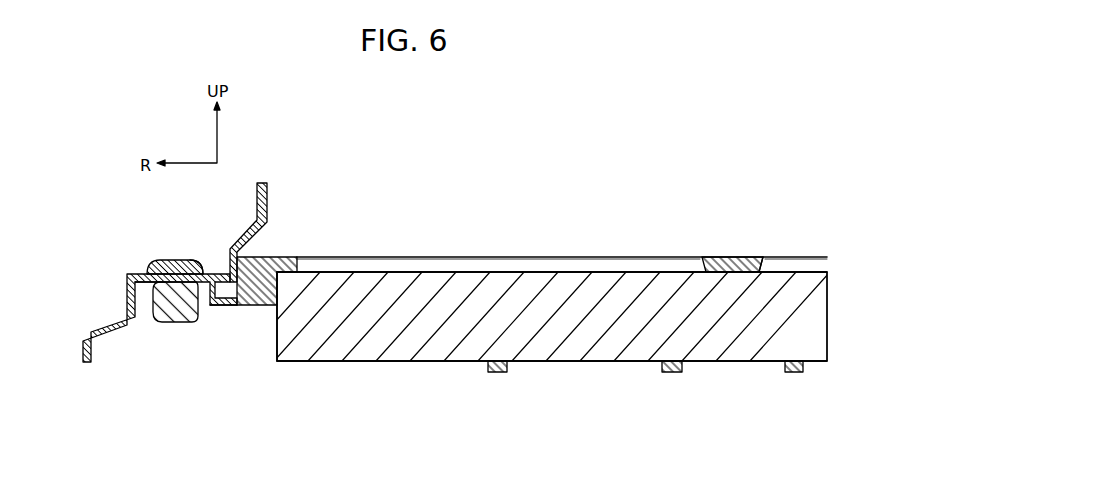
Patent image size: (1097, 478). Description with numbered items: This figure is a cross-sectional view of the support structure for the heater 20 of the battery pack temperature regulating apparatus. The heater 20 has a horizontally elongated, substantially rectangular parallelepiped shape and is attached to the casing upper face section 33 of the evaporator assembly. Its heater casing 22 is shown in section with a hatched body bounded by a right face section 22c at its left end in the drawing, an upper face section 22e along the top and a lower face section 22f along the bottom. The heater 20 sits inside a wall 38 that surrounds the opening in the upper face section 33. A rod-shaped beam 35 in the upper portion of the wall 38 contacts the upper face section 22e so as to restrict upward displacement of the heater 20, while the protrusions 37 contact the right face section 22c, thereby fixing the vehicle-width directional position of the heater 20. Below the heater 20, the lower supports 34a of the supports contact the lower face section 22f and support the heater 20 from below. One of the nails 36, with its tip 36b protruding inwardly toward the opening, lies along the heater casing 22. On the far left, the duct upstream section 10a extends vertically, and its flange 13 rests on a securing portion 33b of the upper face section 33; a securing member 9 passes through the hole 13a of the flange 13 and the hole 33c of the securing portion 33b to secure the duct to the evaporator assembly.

The securing member 9 is at (158, 259).
The duct upstream section 10a is at (254, 212).
The flange 13 is at (136, 273).
The hole 13a is at (191, 261).
The heater 20 is at (340, 371).
The heater casing 22 is at (393, 350).
The right face section 22c is at (277, 335).
The upper face section 22e is at (370, 271).
The lower face section 22f is at (450, 362).
The casing upper face section 33 is at (550, 255).
The securing portion 33b is at (143, 288).
The hole 33c is at (170, 323).
The lower support 34a is at (497, 373).
The beam 35 is at (291, 257).
The nail 36 is at (717, 255).
The tip 36b is at (750, 257).
The protrusion 37 is at (252, 306).
The wall 38 is at (423, 257).